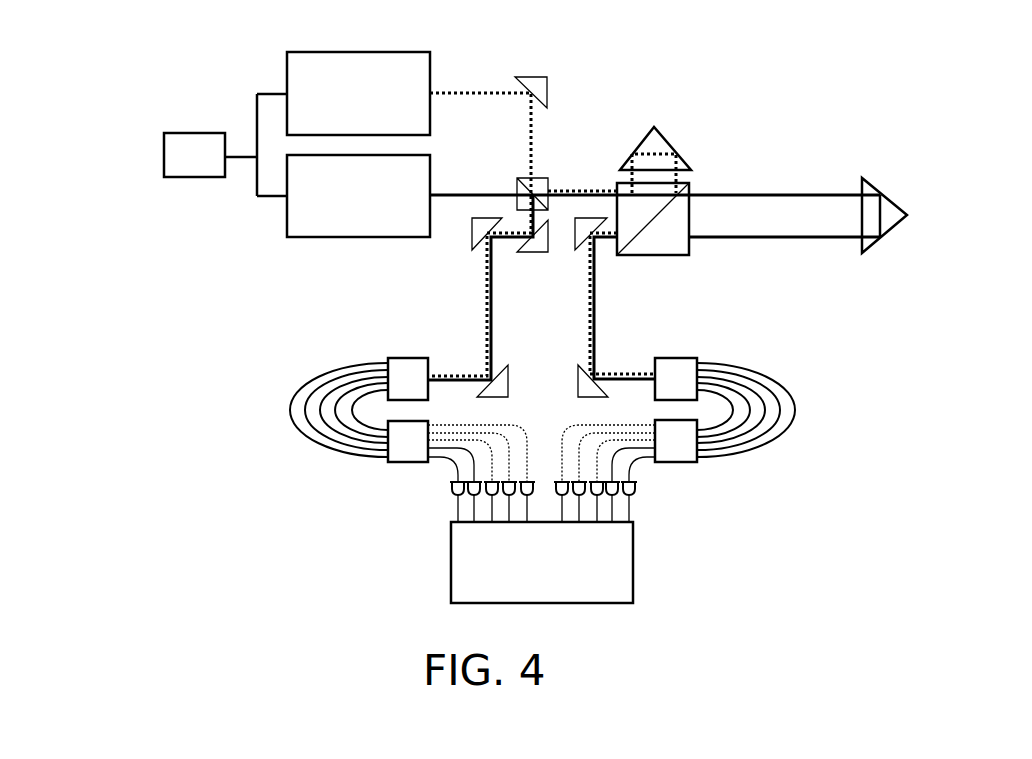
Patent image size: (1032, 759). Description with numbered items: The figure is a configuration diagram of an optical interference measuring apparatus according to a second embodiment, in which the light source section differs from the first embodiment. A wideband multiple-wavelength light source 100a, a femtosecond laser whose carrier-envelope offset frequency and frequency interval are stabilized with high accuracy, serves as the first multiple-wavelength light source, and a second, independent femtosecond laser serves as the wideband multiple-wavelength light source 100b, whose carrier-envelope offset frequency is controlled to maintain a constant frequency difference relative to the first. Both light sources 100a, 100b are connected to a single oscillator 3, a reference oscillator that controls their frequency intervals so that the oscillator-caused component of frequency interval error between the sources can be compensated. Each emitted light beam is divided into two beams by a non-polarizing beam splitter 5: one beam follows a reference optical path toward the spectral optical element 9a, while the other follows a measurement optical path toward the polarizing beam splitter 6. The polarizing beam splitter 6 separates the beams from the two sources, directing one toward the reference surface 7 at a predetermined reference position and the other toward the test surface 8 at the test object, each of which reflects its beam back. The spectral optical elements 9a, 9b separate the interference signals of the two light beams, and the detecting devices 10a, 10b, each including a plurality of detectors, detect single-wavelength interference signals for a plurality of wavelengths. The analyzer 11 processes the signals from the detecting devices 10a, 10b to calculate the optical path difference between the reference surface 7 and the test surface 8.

The oscillator 3 is at (188, 153).
The wideband multiple-wavelength light source 100a is at (357, 217).
The wideband multiple-wavelength light source 100b is at (337, 78).
The non-polarizing beam splitter 5 is at (540, 185).
The polarizing beam splitter 6 is at (680, 245).
The reference surface 7 is at (648, 160).
The test surface 8 is at (862, 177).
The spectral optical element 9a is at (400, 379).
The spectral optical element 9b is at (678, 444).
The detecting device 10a is at (450, 485).
The detecting device 10b is at (637, 486).
The analyzer 11 is at (613, 535).